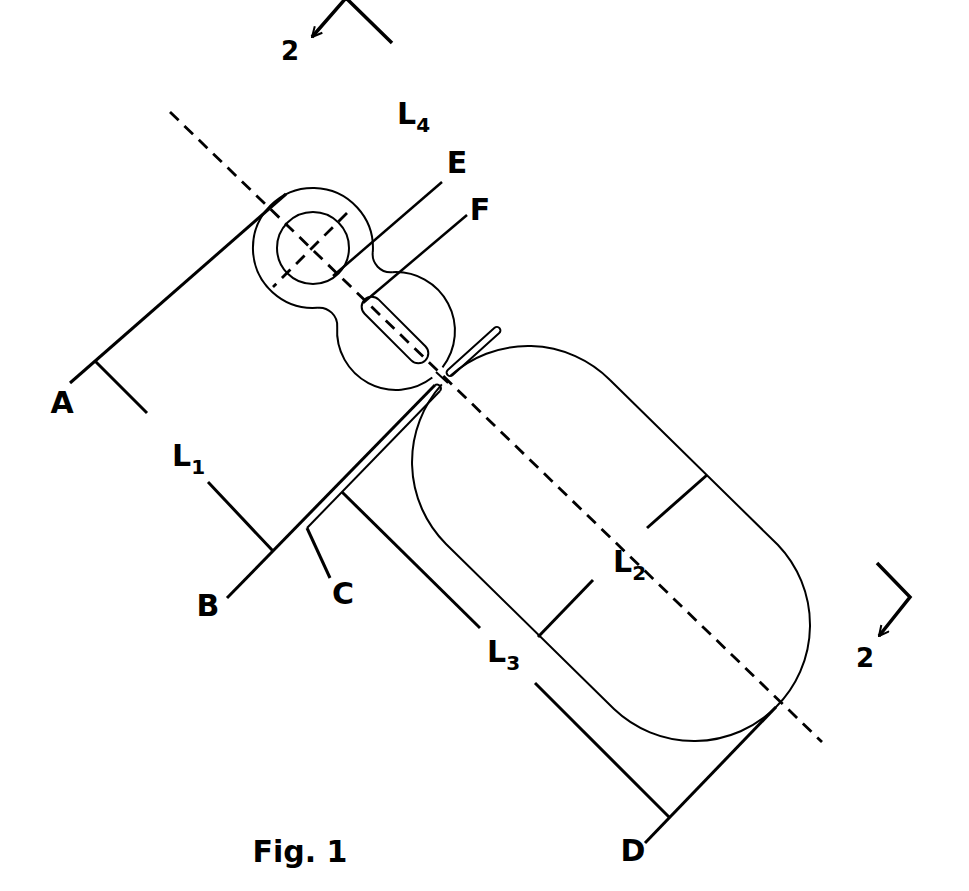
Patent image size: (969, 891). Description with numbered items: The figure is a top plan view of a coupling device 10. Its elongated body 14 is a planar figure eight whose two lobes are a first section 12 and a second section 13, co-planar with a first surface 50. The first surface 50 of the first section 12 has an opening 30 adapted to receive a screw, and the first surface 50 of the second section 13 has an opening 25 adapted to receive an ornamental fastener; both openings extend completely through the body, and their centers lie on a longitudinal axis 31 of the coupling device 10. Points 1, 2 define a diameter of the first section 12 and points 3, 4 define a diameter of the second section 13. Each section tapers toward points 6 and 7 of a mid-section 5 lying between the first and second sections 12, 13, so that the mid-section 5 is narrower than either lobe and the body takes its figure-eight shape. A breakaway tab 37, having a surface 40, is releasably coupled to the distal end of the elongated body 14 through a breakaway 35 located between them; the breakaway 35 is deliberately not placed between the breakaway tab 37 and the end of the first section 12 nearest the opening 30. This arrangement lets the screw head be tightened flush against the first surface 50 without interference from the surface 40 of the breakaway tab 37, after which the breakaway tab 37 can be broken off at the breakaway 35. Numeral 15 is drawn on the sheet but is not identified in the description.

The point 1 is at (353, 207).
The point 2 is at (273, 285).
The point 3 is at (443, 287).
The point 4 is at (365, 363).
The mid-section 5 is at (326, 311).
The point 6 is at (332, 312).
The point 7 is at (381, 267).
The coupling device 10 is at (725, 246).
The first section 12 is at (337, 170).
The second section 13 is at (352, 389).
The elongated body 14 is at (243, 272).
The upper tangent rib 15 is at (497, 322).
The opening 25 is at (415, 362).
The opening 30 is at (313, 246).
The longitudinal axis 31 is at (253, 190).
The breakaway 35 is at (447, 378).
The breakaway tab 37 is at (713, 436).
The surface 40 is at (558, 507).
The first surface 50 is at (290, 290).